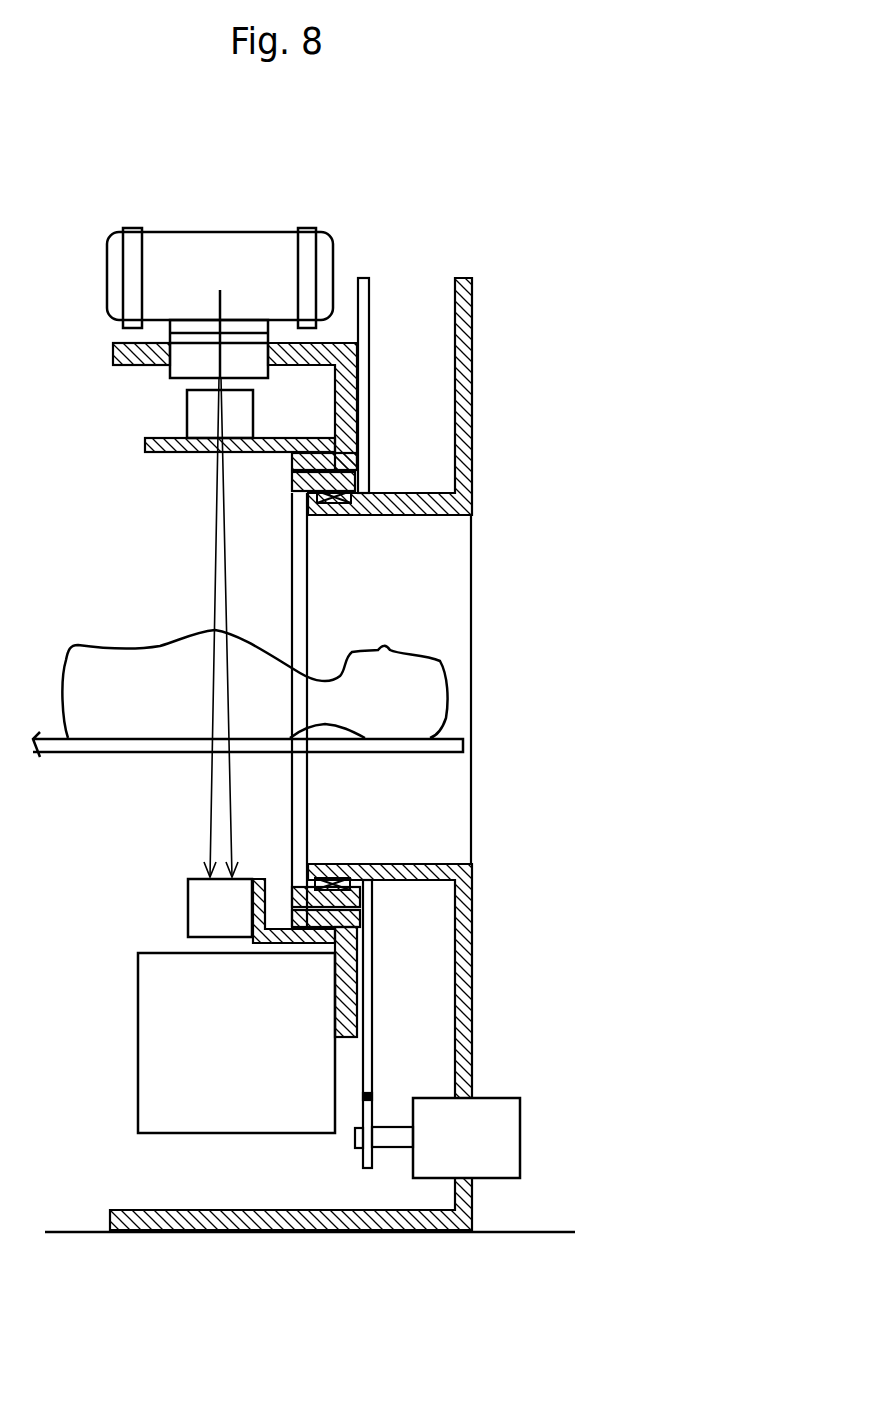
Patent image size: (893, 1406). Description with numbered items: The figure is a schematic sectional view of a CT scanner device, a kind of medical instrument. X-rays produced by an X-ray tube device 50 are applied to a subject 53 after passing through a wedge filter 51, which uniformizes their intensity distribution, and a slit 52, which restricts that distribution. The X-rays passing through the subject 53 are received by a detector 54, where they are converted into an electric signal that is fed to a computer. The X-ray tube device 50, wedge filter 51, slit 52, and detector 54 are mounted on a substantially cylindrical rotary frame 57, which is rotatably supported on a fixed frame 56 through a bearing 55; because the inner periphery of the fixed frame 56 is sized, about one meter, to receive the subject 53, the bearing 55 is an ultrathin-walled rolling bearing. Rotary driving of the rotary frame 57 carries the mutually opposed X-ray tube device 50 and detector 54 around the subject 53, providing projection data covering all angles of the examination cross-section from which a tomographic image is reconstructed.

The X-ray tube device 50 is at (163, 240).
The wedge filter 51 is at (187, 412).
The slit 52 is at (207, 452).
The subject 53 is at (90, 660).
The detector 54 is at (200, 912).
The bearing 55 is at (347, 517).
The fixed frame 56 is at (430, 508).
The rotary frame 57 is at (293, 480).